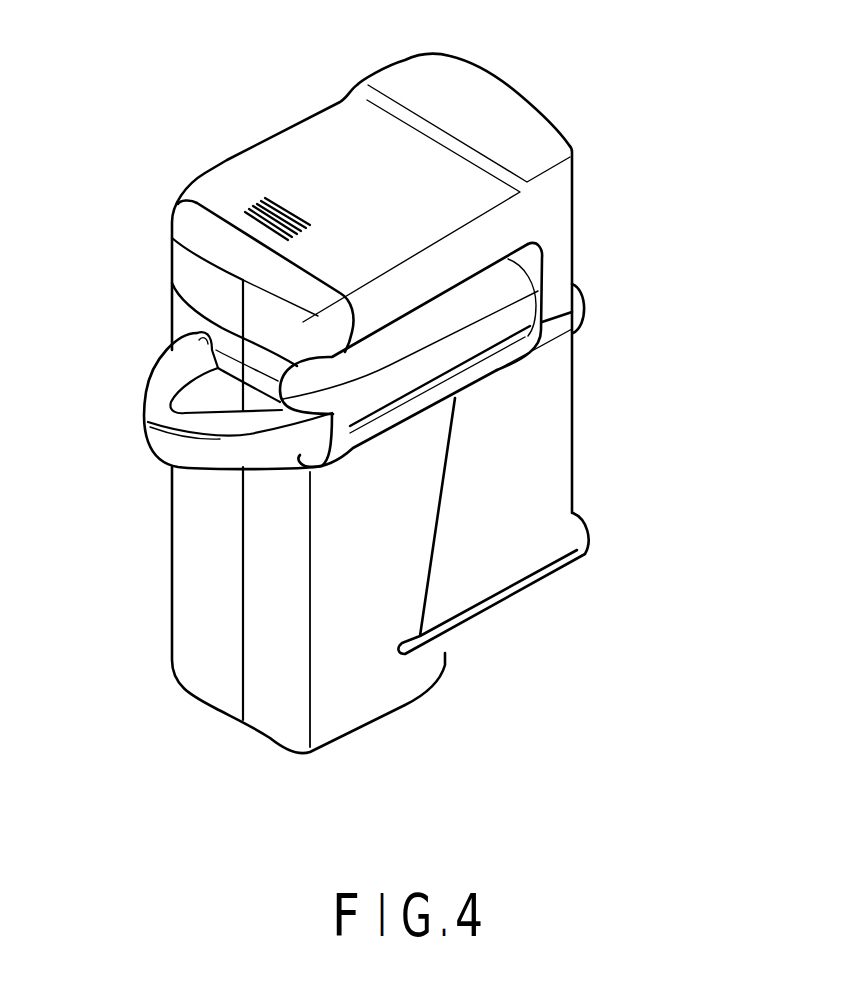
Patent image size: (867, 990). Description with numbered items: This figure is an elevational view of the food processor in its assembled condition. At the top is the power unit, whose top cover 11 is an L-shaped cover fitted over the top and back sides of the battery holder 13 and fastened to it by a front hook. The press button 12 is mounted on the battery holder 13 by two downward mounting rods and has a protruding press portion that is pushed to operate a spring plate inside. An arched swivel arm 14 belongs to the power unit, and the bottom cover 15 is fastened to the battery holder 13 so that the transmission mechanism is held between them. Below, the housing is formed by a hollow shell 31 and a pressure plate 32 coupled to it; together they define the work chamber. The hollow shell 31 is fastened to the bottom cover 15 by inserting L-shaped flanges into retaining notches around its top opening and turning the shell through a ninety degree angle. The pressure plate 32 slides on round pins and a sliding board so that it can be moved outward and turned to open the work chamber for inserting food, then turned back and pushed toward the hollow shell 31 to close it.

The top cover 11 is at (508, 98).
The press button 12 is at (190, 236).
The battery holder 13 is at (520, 305).
The arched swivel arm 14 is at (198, 455).
The bottom cover 15 is at (500, 357).
The hollow shell 31 is at (398, 696).
The pressure plate 32 is at (557, 470).